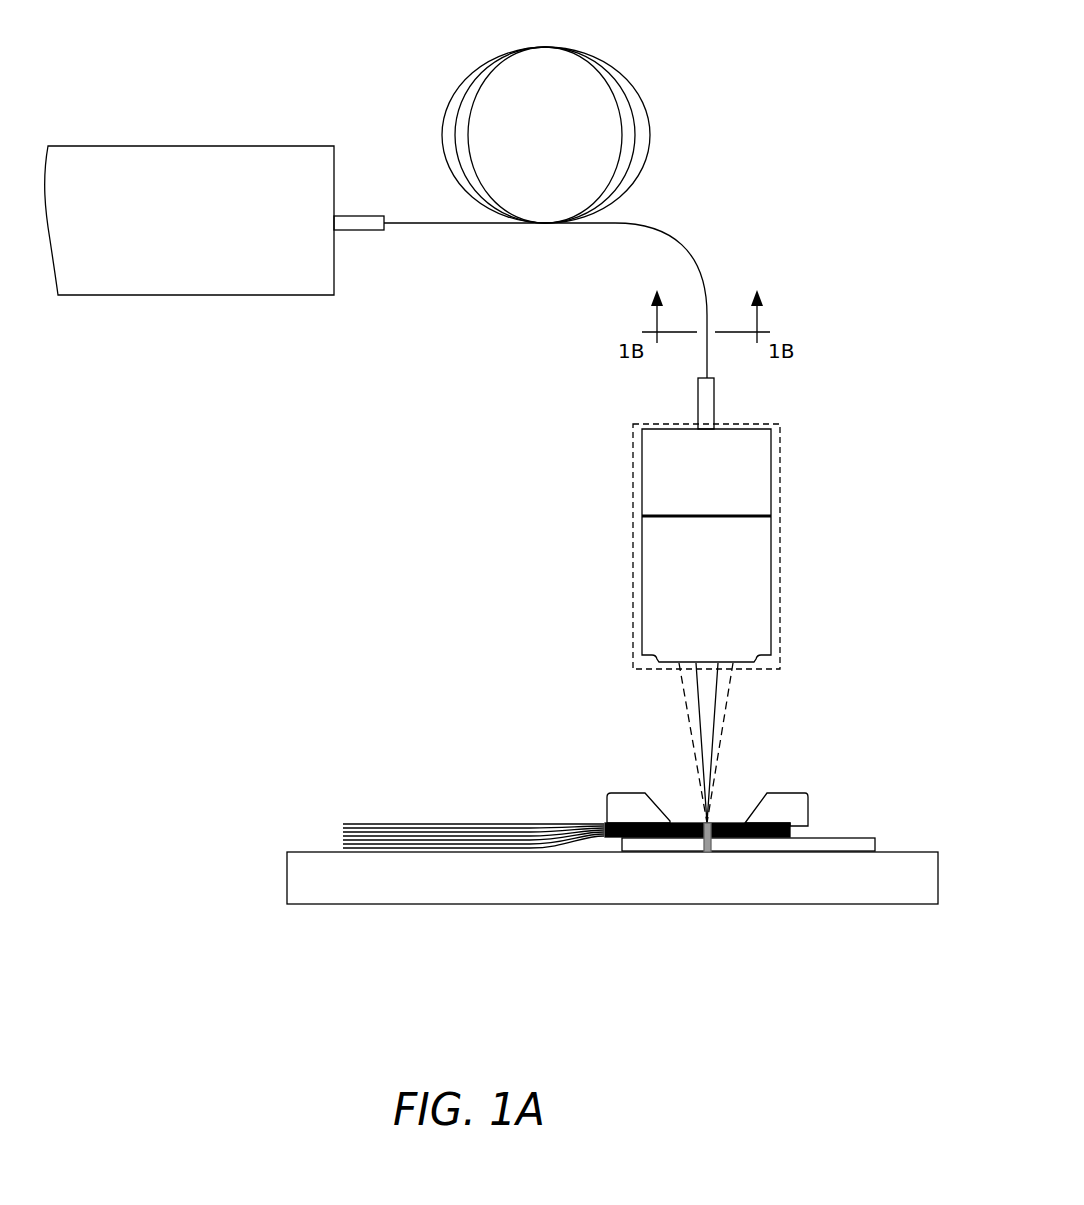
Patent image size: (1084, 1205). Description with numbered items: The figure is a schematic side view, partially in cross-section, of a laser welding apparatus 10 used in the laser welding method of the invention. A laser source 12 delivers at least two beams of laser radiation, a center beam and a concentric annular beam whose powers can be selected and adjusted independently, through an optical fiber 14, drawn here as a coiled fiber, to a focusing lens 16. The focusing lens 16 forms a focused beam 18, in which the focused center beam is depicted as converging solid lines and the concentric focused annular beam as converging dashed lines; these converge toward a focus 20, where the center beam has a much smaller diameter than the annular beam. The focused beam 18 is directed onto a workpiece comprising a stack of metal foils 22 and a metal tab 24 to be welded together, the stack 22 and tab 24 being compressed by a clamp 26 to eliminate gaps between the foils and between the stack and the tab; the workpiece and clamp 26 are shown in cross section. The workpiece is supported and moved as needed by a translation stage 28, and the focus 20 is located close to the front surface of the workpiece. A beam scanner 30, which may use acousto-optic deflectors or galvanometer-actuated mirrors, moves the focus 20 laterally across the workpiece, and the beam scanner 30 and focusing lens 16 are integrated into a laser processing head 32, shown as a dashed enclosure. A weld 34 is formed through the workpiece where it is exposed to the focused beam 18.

The apparatus 10 is at (803, 155).
The laser source 12 is at (151, 153).
The optical fiber 14 is at (664, 118).
The focusing lens 16 is at (767, 559).
The focused beam 18 is at (668, 712).
The focus 20 is at (710, 820).
The stack of metal foils 22 is at (443, 822).
The metal tab 24 is at (867, 838).
The clamp 26 is at (611, 793).
The translation stage 28 is at (288, 865).
The beam scanner 30 is at (763, 462).
The laser processing head 32 is at (633, 527).
The weld 34 is at (708, 852).